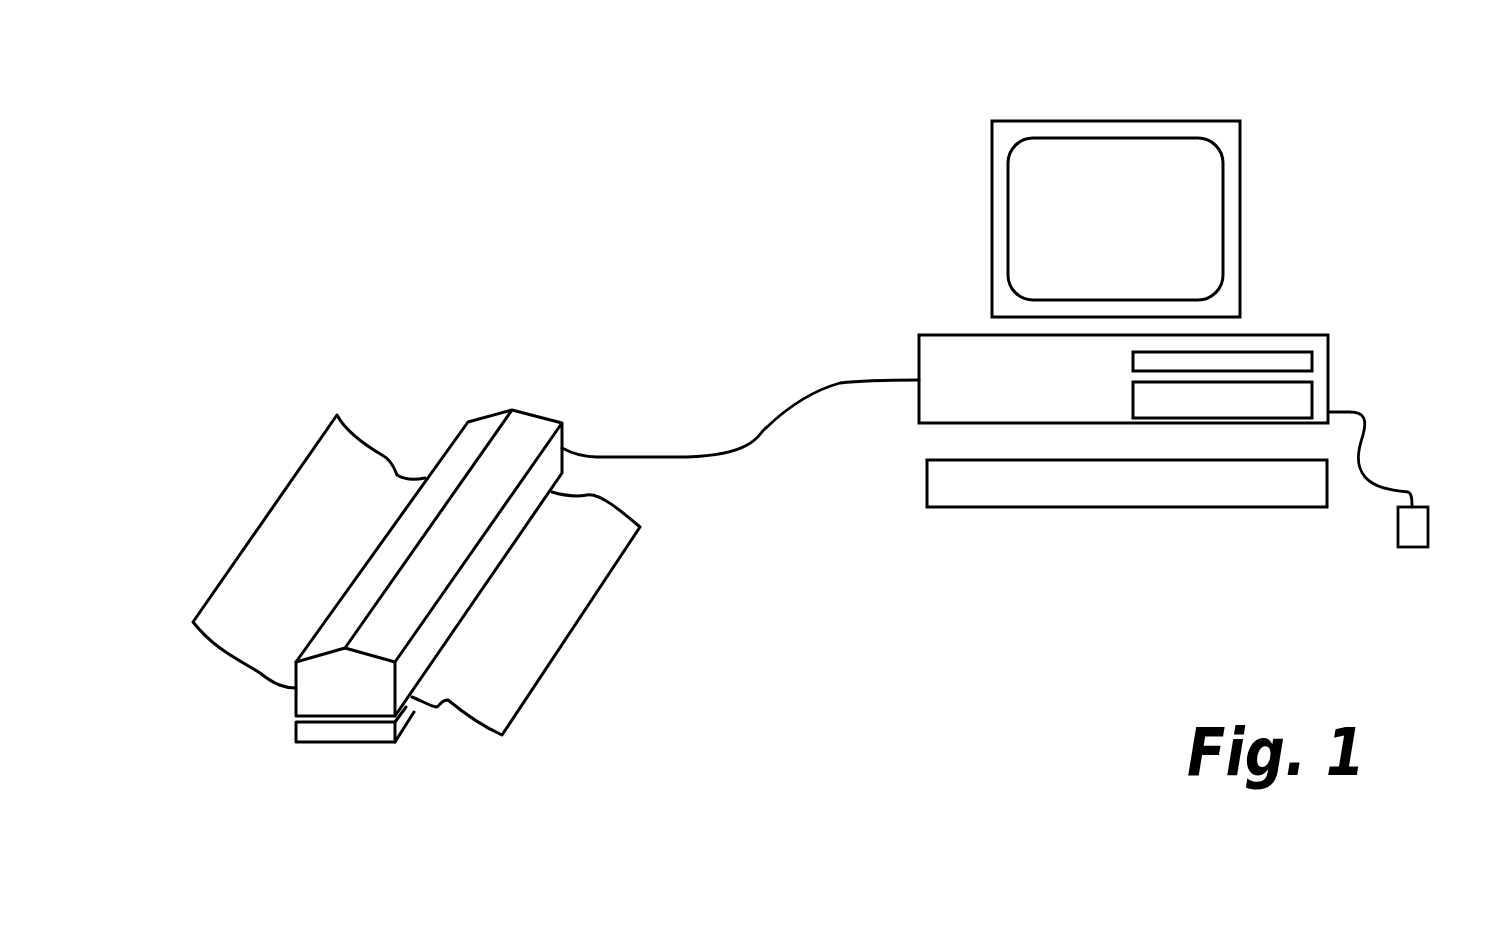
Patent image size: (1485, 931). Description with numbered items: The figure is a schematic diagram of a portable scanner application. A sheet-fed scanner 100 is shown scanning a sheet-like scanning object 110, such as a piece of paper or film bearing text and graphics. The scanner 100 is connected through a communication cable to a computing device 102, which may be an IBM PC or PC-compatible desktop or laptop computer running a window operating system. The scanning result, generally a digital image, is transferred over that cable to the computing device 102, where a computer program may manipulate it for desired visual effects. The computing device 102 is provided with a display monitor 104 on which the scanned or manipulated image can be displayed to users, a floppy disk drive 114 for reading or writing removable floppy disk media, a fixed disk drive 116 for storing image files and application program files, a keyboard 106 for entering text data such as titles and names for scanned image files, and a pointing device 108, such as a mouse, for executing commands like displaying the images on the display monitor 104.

The scanner 100 is at (517, 402).
The computing device 102 is at (1111, 299).
The display monitor 104 is at (1085, 157).
The keyboard 106 is at (942, 493).
The pointing device 108 is at (1418, 538).
The scanning object 110 is at (310, 503).
The floppy disk drive 114 is at (1302, 362).
The fixed disk drive 116 is at (1305, 402).